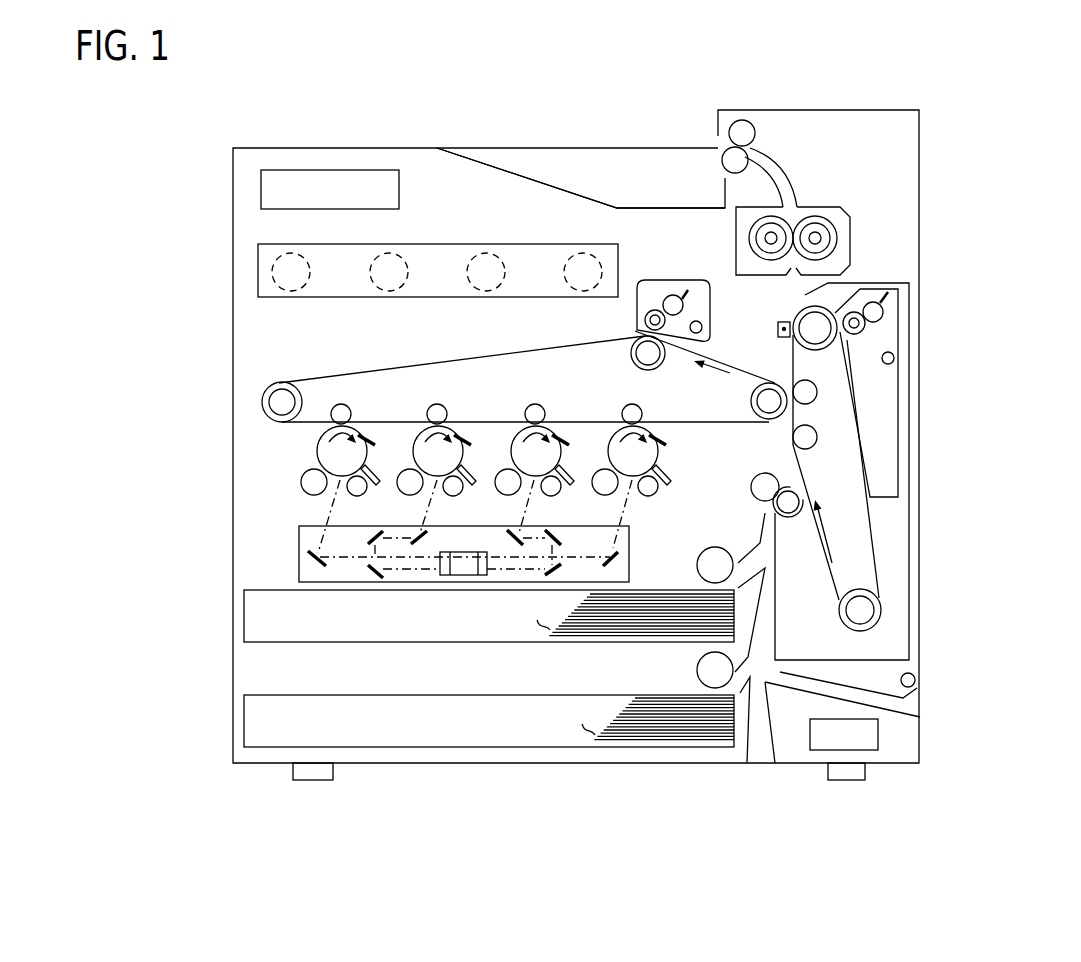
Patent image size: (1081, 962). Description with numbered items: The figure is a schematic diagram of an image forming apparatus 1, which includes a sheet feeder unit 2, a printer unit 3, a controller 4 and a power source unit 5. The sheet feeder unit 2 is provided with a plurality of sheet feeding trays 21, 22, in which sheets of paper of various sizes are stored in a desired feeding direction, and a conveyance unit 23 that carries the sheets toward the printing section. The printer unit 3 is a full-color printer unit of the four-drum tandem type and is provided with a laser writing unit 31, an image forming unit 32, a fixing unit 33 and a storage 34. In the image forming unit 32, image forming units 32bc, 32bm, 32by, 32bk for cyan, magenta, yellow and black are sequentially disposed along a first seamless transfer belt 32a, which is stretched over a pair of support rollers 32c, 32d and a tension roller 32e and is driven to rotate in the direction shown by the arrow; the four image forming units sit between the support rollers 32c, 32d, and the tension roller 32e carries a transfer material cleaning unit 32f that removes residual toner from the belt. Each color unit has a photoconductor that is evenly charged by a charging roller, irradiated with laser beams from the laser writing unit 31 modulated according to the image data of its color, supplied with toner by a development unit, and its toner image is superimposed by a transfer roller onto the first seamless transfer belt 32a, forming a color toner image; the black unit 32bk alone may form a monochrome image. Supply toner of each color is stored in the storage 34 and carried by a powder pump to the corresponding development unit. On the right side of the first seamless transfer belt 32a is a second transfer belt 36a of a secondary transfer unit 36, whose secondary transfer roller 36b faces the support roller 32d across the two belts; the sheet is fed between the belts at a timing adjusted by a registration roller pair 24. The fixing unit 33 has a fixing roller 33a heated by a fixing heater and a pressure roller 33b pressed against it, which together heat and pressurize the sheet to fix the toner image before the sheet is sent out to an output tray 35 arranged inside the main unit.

The image forming apparatus 1 is at (858, 76).
The sheet feeder unit 2 is at (248, 665).
The printer unit 3 is at (248, 336).
The controller 4 is at (400, 190).
The power source unit 5 is at (878, 735).
The sheet feeding tray 21 is at (244, 710).
The sheet feeding tray 22 is at (244, 605).
The conveyance unit 23 is at (781, 606).
The registration roller pair 24 is at (750, 487).
The laser writing unit 31 is at (299, 542).
The image forming unit 32 is at (332, 362).
The first seamless transfer belt 32a is at (412, 360).
The image forming unit of cyan 32bc is at (375, 456).
The image forming unit of magenta 32bm is at (471, 456).
The image forming unit of yellow 32by is at (569, 456).
The image forming unit of black 32bk is at (666, 456).
The support roller 32c is at (303, 390).
The support roller 32d is at (749, 396).
The tension roller 32e is at (630, 352).
The transfer material cleaning unit 32f is at (712, 302).
The fixing unit 33 is at (822, 206).
The fixing roller 33a is at (748, 238).
The pressure roller 33b is at (838, 232).
The storage 34 is at (512, 243).
The output tray 35 is at (588, 198).
The secondary transfer unit 36 is at (811, 540).
The second transfer belt 36a is at (872, 540).
The secondary transfer roller 36b is at (812, 402).